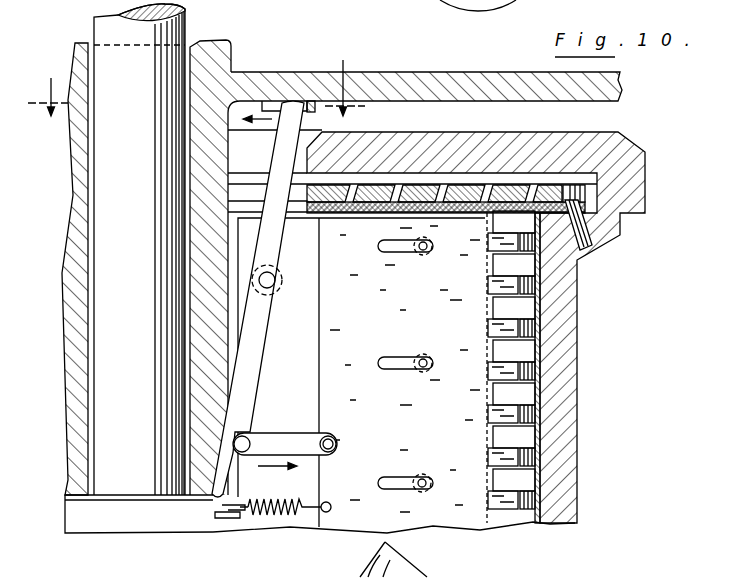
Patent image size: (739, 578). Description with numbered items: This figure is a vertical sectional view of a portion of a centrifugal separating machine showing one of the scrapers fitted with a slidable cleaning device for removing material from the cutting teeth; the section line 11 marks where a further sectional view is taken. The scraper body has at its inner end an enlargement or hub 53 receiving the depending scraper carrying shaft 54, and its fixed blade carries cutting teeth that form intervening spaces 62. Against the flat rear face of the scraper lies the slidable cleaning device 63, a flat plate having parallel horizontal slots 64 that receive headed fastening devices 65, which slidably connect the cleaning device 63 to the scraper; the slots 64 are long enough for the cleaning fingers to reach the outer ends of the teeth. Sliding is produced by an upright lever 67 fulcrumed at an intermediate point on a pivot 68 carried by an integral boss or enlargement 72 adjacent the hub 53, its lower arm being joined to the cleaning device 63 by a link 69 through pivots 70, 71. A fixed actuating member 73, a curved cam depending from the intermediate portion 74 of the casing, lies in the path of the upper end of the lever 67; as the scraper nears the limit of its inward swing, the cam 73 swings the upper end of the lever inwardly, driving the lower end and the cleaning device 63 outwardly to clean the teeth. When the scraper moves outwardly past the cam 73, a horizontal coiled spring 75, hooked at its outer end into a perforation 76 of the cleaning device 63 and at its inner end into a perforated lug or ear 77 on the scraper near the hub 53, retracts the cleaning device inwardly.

The section line 11- 11 is at (200, 84).
The enlargement or hub 53 is at (145, 527).
The scraper carrying shaft 54 is at (97, 280).
The intervening spaces 62 is at (513, 367).
The slidable cleaning device 63 is at (361, 372).
The horizontal slots 64 is at (383, 368).
The headed fastening devices 65 is at (431, 359).
The upright lever 67 is at (262, 334).
The pivot 68 is at (277, 268).
The link 69 is at (305, 432).
The pivot 70 is at (334, 438).
The pivot 71 is at (231, 456).
The integral boss or enlargement 72 is at (282, 280).
The fixed actuating member 73 is at (312, 101).
The intermediate portion of the casing 74 is at (503, 49).
The coiled spring 75 is at (290, 520).
The perforation 76 is at (327, 501).
The perforated lug or ear 77 is at (227, 520).